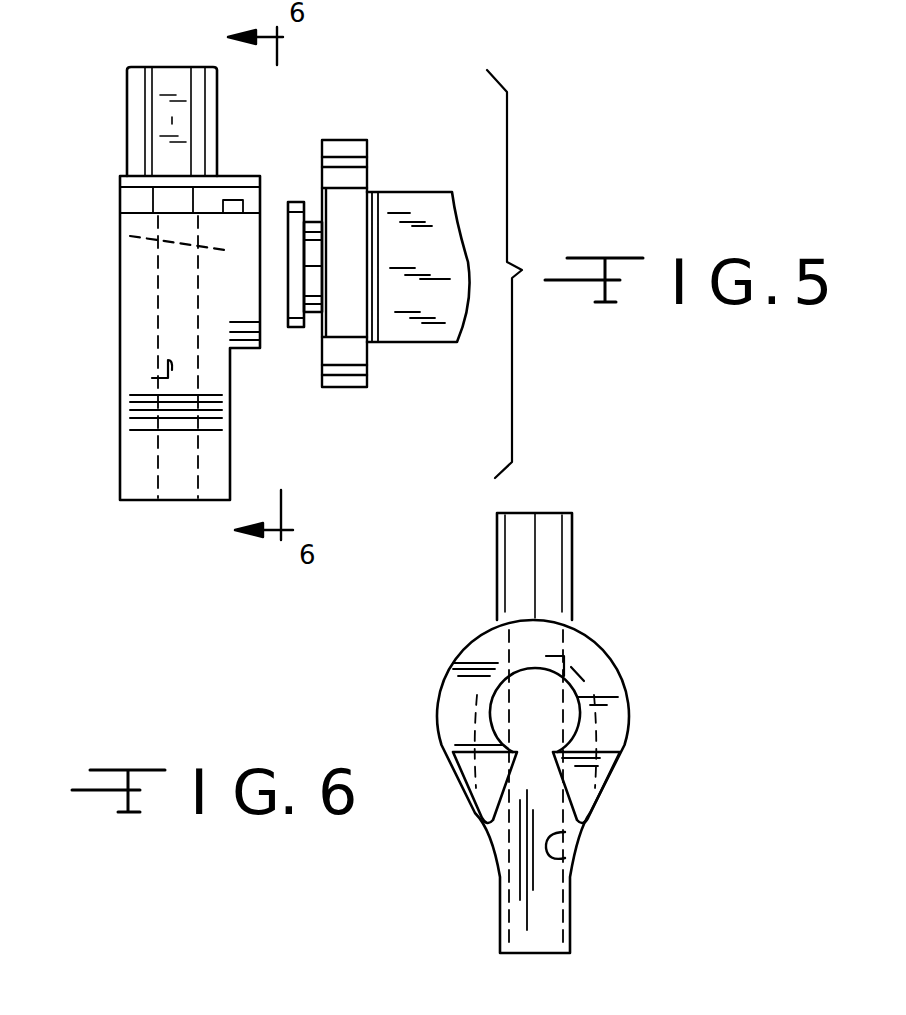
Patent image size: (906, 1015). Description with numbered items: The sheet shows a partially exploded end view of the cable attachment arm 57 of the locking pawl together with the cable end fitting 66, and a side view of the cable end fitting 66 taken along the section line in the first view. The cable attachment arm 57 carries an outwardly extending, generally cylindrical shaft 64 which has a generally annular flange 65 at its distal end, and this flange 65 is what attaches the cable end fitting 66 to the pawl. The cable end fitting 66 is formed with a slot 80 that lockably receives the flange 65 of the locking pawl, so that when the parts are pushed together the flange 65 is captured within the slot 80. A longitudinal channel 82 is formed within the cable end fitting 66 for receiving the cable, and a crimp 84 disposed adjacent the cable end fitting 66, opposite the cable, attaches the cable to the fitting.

In FIG. 5, the cable attachment arm 57 is at (405, 185).
In FIG. 5, the cylindrical shaft 64 is at (313, 222).
In FIG. 5, the annular flange 65 is at (296, 330).
In FIG. 5, the cable end fitting 66 is at (120, 330).
In FIG. 6, the cable end fitting 66 is at (625, 684).
In FIG. 5, the slot 80 is at (130, 232).
In FIG. 6, the slot 80 is at (565, 665).
In FIG. 5, the longitudinal channel 82 is at (152, 378).
In FIG. 6, the longitudinal channel 82 is at (570, 858).
In FIG. 5, the crimp 84 is at (127, 110).
In FIG. 6, the crimp 84 is at (572, 548).